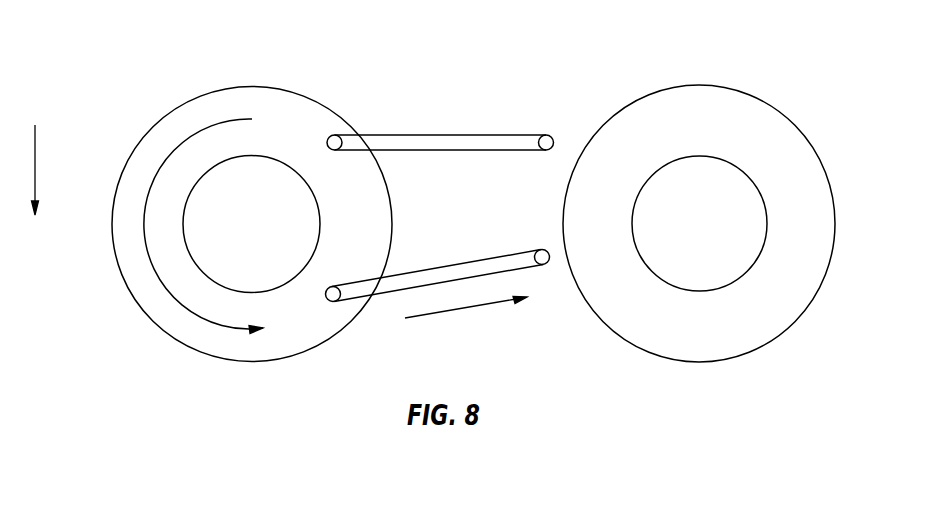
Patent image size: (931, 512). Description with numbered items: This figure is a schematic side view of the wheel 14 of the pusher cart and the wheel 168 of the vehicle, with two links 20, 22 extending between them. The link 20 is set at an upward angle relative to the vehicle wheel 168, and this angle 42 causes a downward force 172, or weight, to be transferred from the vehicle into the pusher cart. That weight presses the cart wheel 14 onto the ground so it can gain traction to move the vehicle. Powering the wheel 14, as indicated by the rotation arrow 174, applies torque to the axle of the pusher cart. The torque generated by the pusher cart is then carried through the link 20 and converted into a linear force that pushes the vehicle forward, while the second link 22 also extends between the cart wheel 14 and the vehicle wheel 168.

The wheel 14 is at (172, 322).
The link 20 is at (483, 258).
The link 22 is at (470, 133).
The angle 42 is at (467, 307).
The wheel 168 is at (724, 102).
The downward force 172 is at (35, 152).
The powering of wheel 174 is at (153, 268).